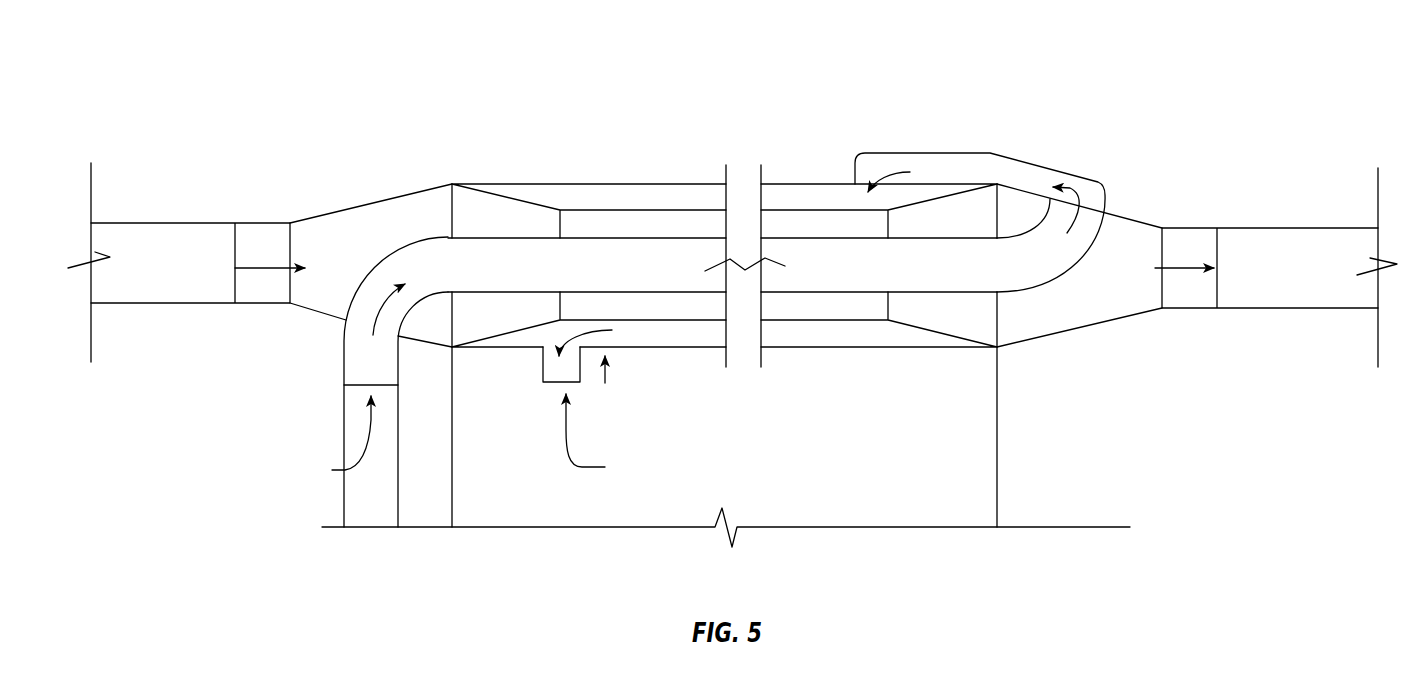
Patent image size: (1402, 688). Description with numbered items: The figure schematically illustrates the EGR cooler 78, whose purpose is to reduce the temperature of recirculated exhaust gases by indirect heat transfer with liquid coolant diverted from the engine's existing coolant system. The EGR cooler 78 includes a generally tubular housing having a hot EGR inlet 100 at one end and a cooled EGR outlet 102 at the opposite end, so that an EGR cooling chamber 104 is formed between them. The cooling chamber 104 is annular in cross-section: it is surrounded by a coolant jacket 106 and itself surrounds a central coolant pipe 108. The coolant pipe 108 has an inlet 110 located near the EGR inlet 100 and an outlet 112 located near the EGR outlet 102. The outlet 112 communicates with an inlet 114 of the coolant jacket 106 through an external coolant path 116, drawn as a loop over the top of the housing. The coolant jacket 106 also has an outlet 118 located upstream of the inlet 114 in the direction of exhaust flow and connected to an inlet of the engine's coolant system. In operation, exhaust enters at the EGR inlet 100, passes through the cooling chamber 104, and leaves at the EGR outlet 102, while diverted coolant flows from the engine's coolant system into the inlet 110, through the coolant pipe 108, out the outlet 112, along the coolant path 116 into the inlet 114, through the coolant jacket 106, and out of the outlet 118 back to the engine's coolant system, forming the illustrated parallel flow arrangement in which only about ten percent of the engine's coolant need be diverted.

The EGR cooler 78 is at (729, 66).
The hot EGR inlet 100 is at (233, 238).
The cooled EGR outlet 102 is at (1218, 240).
The EGR cooling chamber 104 is at (781, 322).
The coolant jacket 106 is at (657, 176).
The coolant pipe 108 is at (780, 230).
The inlet of coolant pipe 110 is at (361, 386).
The outlet of coolant pipe 112 is at (1104, 212).
The inlet of coolant jacket 114 is at (856, 182).
The external coolant path 116 is at (993, 153).
The outlet of coolant jacket 118 is at (560, 385).